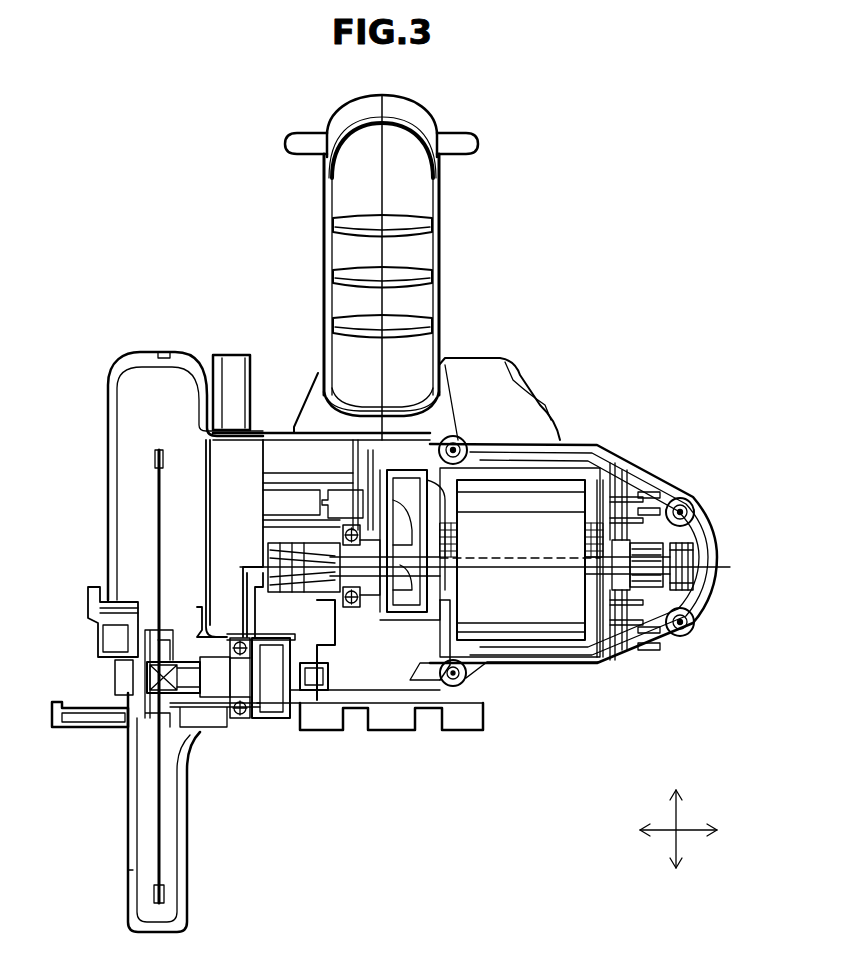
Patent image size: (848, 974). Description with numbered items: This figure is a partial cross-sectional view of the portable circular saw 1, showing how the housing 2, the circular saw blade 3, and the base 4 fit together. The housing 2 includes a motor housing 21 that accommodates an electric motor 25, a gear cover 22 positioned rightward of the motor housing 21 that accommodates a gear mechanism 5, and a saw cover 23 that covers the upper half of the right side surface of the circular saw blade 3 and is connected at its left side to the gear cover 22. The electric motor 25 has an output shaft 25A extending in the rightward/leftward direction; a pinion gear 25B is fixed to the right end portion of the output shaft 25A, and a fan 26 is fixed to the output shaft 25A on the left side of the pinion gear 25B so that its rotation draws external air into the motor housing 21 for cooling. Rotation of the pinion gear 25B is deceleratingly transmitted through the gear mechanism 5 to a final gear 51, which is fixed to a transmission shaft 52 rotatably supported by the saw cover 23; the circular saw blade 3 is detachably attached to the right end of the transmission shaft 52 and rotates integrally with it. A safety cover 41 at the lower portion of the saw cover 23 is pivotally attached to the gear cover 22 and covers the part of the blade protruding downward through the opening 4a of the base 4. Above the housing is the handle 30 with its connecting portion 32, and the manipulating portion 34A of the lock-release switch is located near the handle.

The portable circular saw 1 is at (630, 224).
The housing 2 is at (648, 417).
The circular saw blade 3 is at (150, 825).
The base 4 is at (62, 732).
The opening 4a is at (110, 728).
The gear mechanism 5 is at (345, 655).
The motor housing 21 is at (643, 467).
The gear cover 22 is at (268, 438).
The saw cover 23 is at (130, 368).
The electric motor 25 is at (570, 593).
The output shaft 25A is at (460, 690).
The pinion gear 25B is at (262, 570).
The fan 26 is at (410, 650).
The handle 30 is at (272, 174).
The connecting portion 32 is at (430, 305).
The manipulating portion 34A is at (310, 146).
The safety cover 41 is at (185, 902).
The final gear 51 is at (270, 720).
The transmission shaft 52 is at (315, 680).